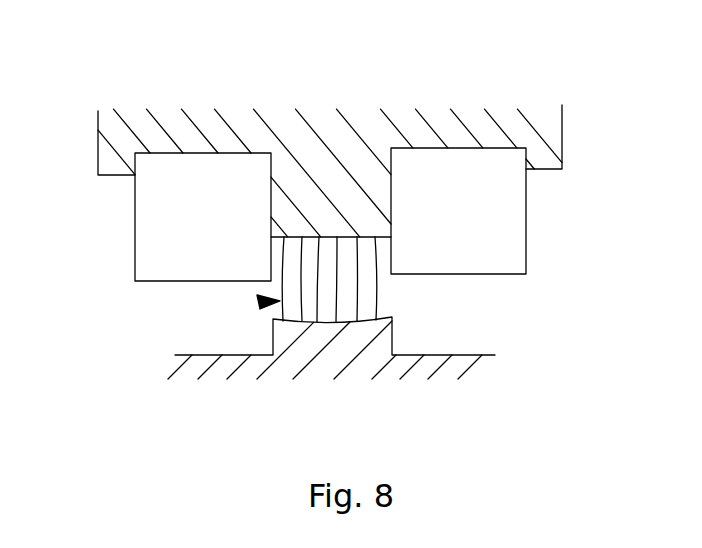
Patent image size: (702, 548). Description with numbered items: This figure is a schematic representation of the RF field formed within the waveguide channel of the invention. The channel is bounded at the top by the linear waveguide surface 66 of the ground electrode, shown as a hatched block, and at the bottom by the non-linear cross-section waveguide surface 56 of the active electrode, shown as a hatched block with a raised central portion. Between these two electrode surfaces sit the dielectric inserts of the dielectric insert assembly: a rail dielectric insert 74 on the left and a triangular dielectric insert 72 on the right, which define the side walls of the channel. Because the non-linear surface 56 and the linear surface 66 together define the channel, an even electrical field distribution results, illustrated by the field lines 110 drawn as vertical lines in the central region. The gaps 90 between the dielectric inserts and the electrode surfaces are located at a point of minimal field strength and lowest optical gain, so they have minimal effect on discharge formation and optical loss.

The linear waveguide surface 66 is at (329, 237).
The triangular dielectric insert 72 is at (488, 222).
The rail dielectric insert 74 is at (187, 222).
The field lines 110 is at (363, 285).
The non-linear cross-section waveguide surface 56 is at (367, 321).
The gap 90 is at (258, 302).